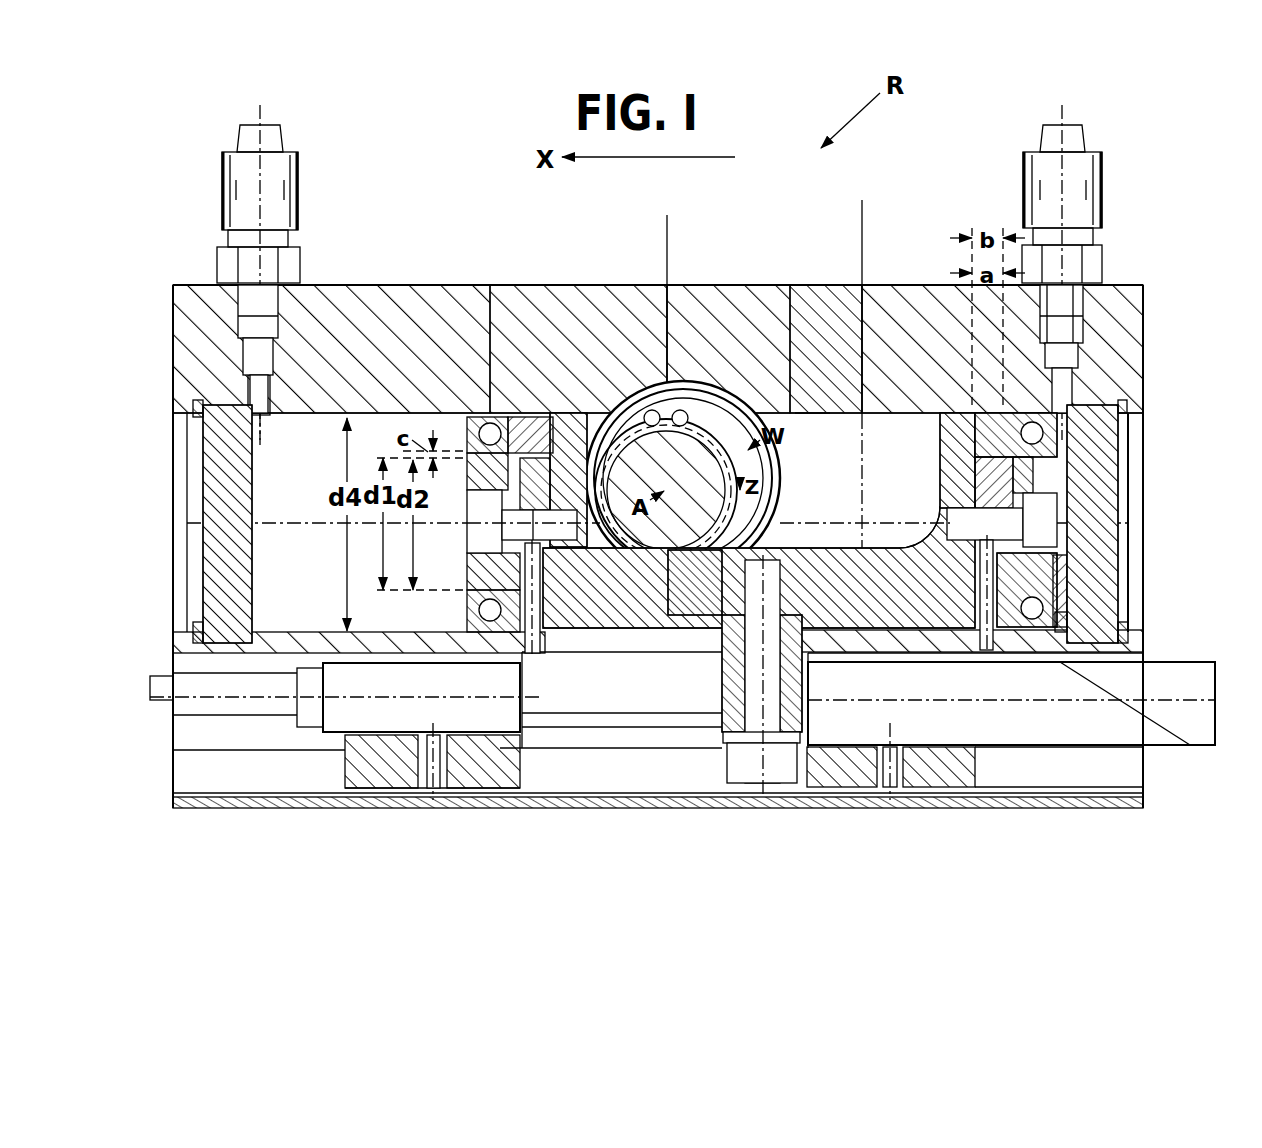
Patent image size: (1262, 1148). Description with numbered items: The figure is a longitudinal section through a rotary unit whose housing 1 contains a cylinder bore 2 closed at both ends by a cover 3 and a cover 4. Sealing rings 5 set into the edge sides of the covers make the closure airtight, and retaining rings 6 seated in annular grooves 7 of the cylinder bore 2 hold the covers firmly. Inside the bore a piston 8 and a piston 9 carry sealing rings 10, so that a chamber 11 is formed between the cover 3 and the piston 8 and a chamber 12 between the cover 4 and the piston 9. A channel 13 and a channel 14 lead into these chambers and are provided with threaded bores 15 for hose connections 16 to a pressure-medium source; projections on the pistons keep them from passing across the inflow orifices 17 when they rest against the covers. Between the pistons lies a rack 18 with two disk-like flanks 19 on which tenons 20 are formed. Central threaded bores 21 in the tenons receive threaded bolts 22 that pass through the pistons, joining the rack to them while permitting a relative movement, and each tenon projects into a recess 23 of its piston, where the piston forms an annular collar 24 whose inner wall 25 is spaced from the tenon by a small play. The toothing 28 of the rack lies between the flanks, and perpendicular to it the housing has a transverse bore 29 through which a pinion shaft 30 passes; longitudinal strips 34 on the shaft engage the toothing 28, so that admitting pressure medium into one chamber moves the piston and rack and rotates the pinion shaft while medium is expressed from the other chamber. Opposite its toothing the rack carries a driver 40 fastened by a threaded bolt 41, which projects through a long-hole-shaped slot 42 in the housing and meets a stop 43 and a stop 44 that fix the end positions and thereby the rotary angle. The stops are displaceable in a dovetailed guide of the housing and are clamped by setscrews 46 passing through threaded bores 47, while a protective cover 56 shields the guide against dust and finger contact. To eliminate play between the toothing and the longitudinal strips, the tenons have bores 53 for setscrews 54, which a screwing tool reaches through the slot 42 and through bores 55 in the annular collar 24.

The housing 1 is at (408, 303).
The cylinder bore 2 is at (1138, 438).
The cover 3 is at (1095, 512).
The cover 4 is at (225, 540).
The sealing rings 5 is at (205, 430).
The retaining rings 6 is at (1100, 618).
The annular grooves 7 is at (1130, 402).
The piston 8 is at (1035, 455).
The piston 9 is at (472, 417).
The sealing rings 10 is at (487, 417).
The chamber 11 is at (1040, 471).
The chamber 12 is at (275, 580).
The channel 13 is at (1085, 398).
The channel 14 is at (262, 430).
The threaded bores 15 is at (283, 307).
The hose connections 16 is at (302, 170).
The inflow orifices 17 is at (264, 419).
The rack 18 is at (812, 413).
The disk-like flanks 19 is at (578, 415).
The tenons 20 is at (544, 440).
The central threaded bores 21 is at (558, 420).
The threaded bolts 22 is at (1045, 531).
The recesses 23 is at (995, 550).
The annular collar 24 is at (517, 458).
The inner wall 25 is at (511, 349).
The toothing 28 is at (790, 413).
The transverse bore 29 is at (686, 383).
The pinion shaft 30 is at (622, 395).
The longitudinal strips 34 is at (612, 410).
The driver 40 is at (718, 730).
The threaded bolt 41 is at (760, 722).
The slot 42 is at (647, 637).
The stop 43 is at (982, 762).
The stop 44 is at (342, 758).
The setscrews 46 is at (435, 768).
The threaded bores 47 is at (422, 777).
The bores 53 is at (1045, 569).
The setscrews 54 is at (1050, 590).
The bores 55 is at (1190, 745).
The protective cover 56 is at (1122, 808).